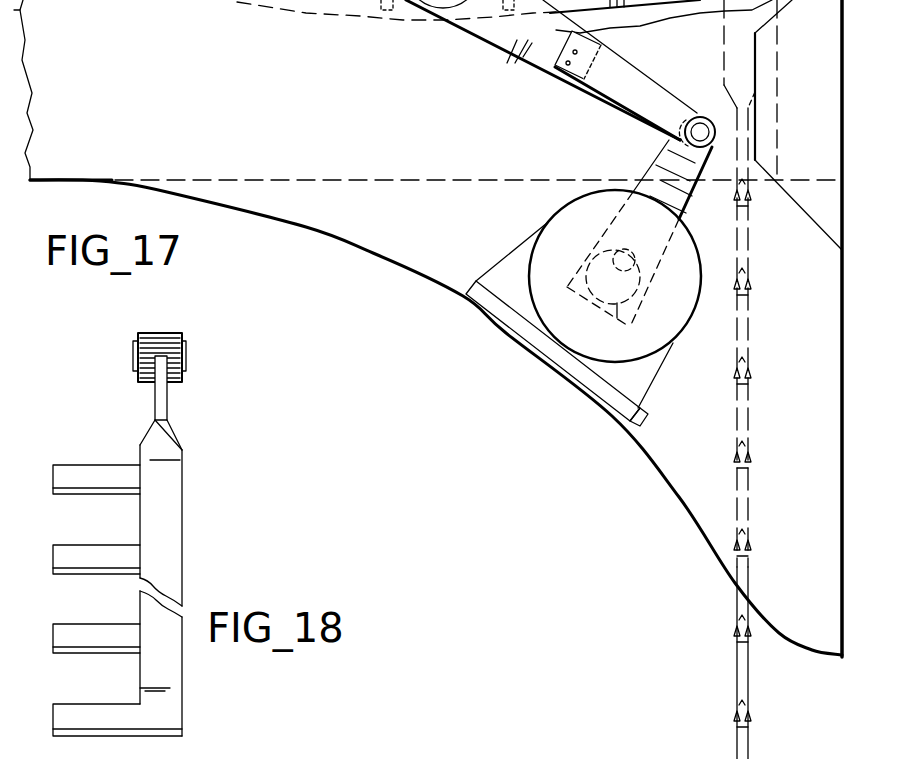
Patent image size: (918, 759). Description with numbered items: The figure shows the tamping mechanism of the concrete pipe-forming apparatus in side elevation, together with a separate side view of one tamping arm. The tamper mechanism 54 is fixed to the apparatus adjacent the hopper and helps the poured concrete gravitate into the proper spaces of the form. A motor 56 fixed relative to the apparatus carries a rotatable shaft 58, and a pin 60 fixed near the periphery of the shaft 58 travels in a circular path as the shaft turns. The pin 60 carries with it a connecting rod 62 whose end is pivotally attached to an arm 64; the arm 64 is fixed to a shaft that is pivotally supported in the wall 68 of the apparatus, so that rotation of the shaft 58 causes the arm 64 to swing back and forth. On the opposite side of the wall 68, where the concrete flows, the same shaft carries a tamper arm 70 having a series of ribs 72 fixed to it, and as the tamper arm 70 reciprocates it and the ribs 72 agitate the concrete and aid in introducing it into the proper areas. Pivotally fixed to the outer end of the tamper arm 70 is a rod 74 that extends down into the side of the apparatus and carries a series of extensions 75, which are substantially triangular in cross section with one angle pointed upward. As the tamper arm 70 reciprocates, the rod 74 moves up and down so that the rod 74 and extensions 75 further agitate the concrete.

In FIG. 17, the tamper mechanism 54 is at (476, 52).
In FIG. 17, the motor 56 is at (526, 326).
In FIG. 17, the rotatable shaft 58 is at (614, 316).
In FIG. 17, the pin 60 is at (637, 277).
In FIG. 17, the connecting rod 62 is at (682, 204).
In FIG. 17, the arm 64 is at (548, 70).
In FIG. 17, the wall 68 is at (222, 113).
In FIG. 17, the tamper arm 70 is at (312, 10).
In FIG. 17, the ribs 72 is at (232, 0).
In FIG. 17, the rod 74 is at (749, 410).
In FIG. 18, the rod 74 is at (184, 516).
In FIG. 17, the extensions 75 is at (750, 546).
In FIG. 18, the extensions 75 is at (66, 494).